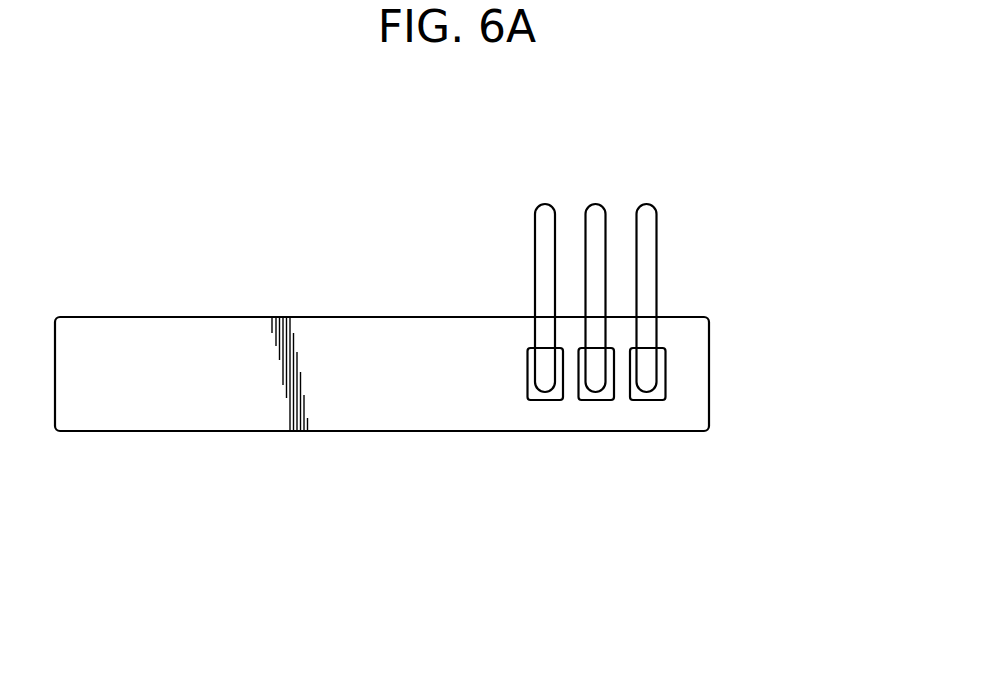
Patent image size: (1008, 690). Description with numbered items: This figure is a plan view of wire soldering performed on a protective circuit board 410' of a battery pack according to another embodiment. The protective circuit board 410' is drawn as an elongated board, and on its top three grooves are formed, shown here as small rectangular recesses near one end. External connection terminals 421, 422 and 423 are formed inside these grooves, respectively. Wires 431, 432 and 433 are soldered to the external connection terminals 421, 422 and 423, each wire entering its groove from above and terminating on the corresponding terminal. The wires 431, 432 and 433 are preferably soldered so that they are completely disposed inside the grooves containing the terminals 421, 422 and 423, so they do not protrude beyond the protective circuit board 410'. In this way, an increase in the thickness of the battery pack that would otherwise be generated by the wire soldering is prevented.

The protective circuit board 410' is at (462, 374).
The external connection terminal 421 is at (538, 398).
The external connection terminal 422 is at (587, 398).
The external connection terminal 423 is at (640, 398).
The wire 431 is at (546, 210).
The wire 432 is at (594, 210).
The wire 433 is at (648, 210).